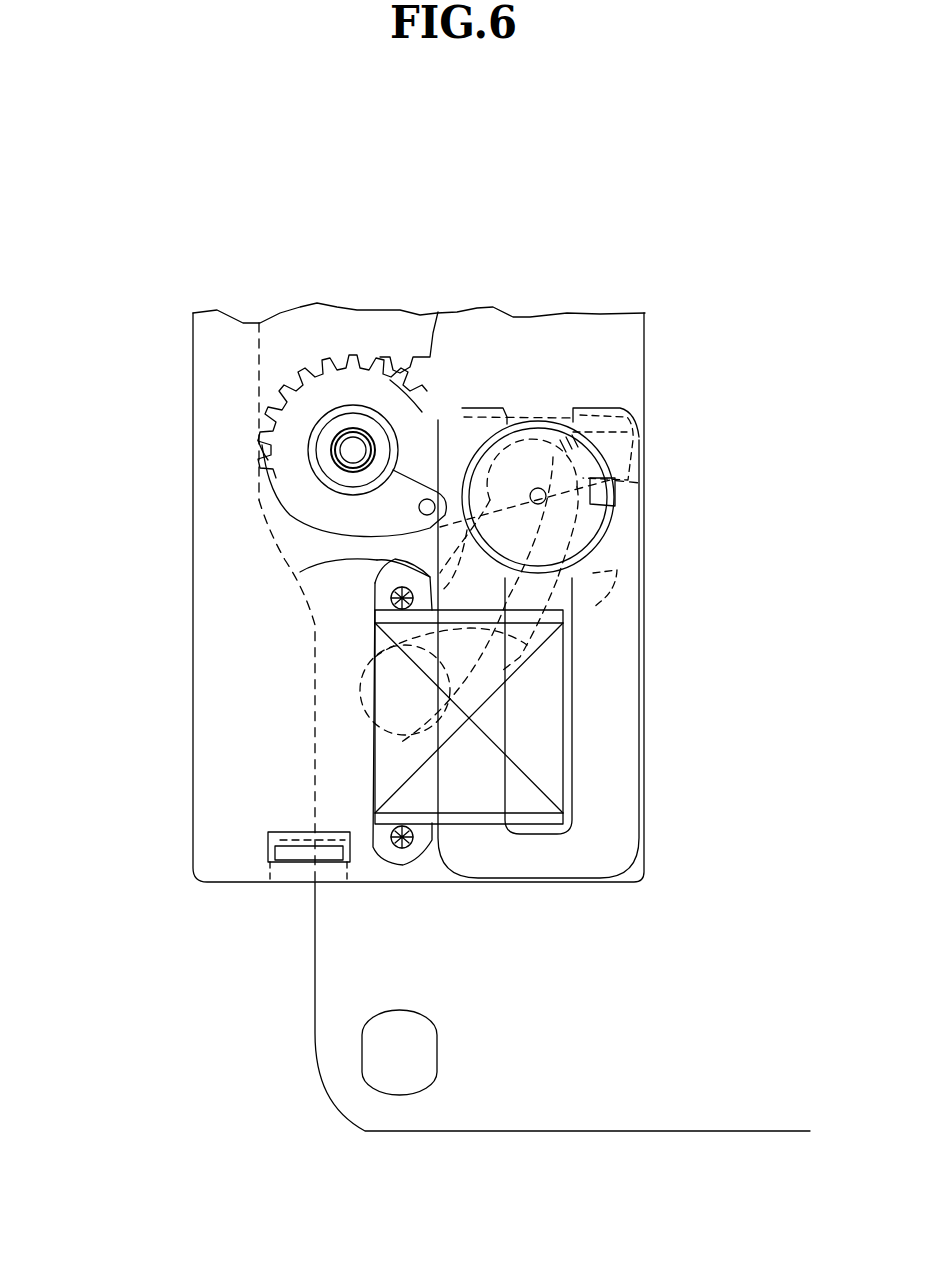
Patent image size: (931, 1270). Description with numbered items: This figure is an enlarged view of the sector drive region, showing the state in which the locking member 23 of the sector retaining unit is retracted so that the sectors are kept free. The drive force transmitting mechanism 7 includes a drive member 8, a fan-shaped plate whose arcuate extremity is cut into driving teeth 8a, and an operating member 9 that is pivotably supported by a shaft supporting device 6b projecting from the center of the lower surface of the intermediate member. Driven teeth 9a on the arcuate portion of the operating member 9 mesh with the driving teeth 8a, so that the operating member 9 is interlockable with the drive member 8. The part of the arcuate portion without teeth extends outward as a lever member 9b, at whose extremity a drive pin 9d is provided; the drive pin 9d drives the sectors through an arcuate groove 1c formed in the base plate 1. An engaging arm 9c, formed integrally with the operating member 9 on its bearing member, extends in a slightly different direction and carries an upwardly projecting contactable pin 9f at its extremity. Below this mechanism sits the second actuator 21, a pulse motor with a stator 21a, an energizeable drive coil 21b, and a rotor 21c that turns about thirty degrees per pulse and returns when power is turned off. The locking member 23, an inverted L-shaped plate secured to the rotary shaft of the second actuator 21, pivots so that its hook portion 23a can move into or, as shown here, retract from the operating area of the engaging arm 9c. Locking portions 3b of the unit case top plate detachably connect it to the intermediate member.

The base plate 1 is at (305, 998).
The arcuate groove 1c is at (618, 603).
The locking portion 3b is at (268, 840).
The shaft supporting device 6b is at (338, 460).
The drive force transmitting mechanism 7 is at (578, 188).
The drive member 8 is at (318, 341).
The driving teeth 8a is at (307, 313).
The operating member 9 is at (382, 485).
The driven teeth 9a is at (258, 440).
The lever member 9b is at (553, 397).
The engaging arm 9c is at (417, 510).
The drive pin 9d is at (627, 438).
The contactable pin 9f is at (442, 420).
The second actuator 21 is at (426, 647).
The stator 21a is at (625, 750).
The drive coil 21b is at (560, 790).
The rotor 21c is at (613, 503).
The locking member 23 is at (311, 600).
The hook portion 23a is at (400, 640).